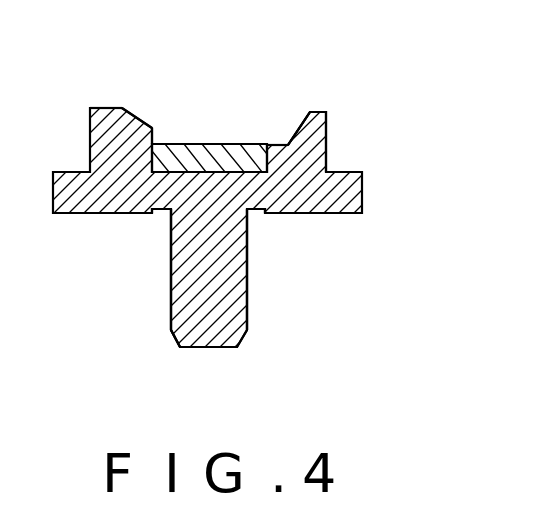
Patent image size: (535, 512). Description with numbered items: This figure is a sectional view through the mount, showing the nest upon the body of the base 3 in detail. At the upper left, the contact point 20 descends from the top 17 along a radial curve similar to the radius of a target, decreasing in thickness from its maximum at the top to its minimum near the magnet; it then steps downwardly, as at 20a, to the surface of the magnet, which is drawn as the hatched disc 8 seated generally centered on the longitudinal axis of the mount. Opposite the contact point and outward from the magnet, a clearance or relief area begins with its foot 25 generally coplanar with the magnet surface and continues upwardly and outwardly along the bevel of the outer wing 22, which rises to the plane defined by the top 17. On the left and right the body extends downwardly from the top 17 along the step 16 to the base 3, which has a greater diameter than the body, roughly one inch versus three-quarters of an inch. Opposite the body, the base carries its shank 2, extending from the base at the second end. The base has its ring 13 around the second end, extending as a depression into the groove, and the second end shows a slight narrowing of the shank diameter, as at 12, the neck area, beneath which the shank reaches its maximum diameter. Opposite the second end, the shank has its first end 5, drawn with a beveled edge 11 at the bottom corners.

The shank 2 is at (217, 297).
The base 3 is at (345, 190).
The first end 5 is at (197, 347).
The disc insert 8 is at (217, 143).
The chamfer 11 is at (175, 338).
The neck area 12 is at (170, 232).
The ring 13 is at (157, 210).
The step 16 is at (320, 152).
The top 17 is at (118, 107).
The contact point 20 is at (139, 115).
The downward step of contact point 20a is at (154, 133).
The outer wing 22 is at (301, 127).
The foot 25 is at (277, 143).